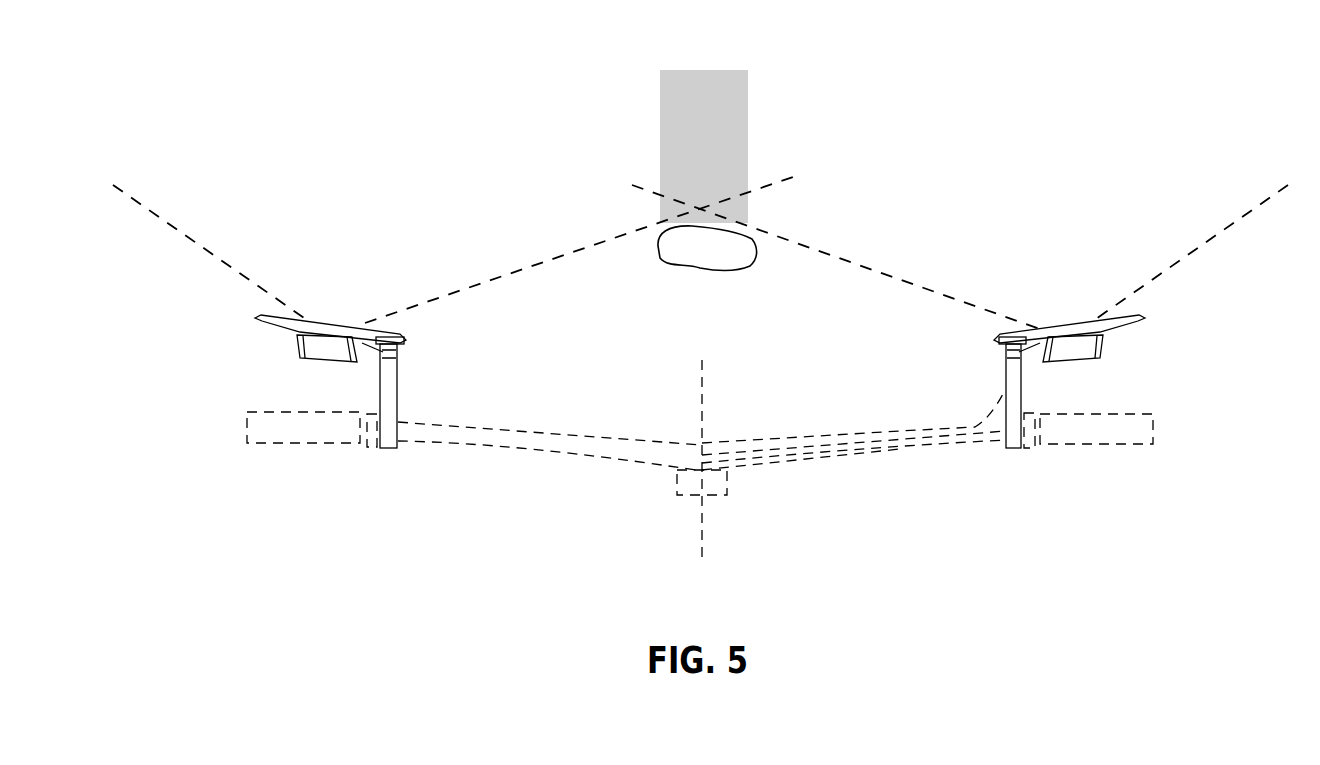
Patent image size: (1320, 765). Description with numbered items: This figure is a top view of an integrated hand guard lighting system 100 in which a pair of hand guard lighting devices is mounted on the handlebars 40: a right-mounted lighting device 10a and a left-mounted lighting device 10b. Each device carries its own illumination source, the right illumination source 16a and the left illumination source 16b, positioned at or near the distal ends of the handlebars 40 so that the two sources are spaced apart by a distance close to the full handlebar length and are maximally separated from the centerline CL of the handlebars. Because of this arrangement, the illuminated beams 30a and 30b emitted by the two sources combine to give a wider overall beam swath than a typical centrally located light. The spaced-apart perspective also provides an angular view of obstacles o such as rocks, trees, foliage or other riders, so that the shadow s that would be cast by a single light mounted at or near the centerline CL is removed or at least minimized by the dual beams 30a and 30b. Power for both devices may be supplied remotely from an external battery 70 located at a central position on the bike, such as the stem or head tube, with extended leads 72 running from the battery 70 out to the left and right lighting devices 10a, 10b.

The lighting system 100 is at (565, 142).
The right-mounted lighting device 10a is at (1018, 360).
The left-mounted lighting device 10b is at (384, 348).
The right illumination source 16a is at (1062, 314).
The left illumination source 16b is at (351, 292).
The illuminated beam 30a is at (852, 262).
The illuminated beam 30b is at (593, 240).
The handlebars 40 is at (773, 442).
The external battery 70 is at (728, 484).
The extended leads 72 is at (800, 448).
The shadow s is at (750, 153).
The obstacle o is at (753, 242).
The centerline CL is at (703, 408).